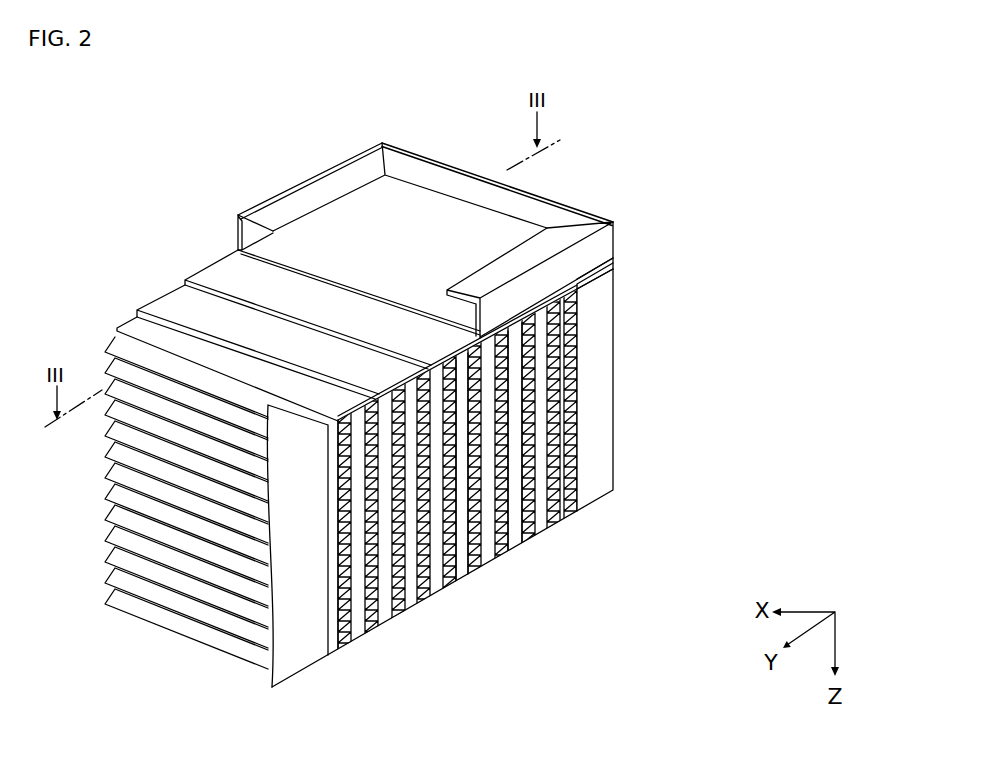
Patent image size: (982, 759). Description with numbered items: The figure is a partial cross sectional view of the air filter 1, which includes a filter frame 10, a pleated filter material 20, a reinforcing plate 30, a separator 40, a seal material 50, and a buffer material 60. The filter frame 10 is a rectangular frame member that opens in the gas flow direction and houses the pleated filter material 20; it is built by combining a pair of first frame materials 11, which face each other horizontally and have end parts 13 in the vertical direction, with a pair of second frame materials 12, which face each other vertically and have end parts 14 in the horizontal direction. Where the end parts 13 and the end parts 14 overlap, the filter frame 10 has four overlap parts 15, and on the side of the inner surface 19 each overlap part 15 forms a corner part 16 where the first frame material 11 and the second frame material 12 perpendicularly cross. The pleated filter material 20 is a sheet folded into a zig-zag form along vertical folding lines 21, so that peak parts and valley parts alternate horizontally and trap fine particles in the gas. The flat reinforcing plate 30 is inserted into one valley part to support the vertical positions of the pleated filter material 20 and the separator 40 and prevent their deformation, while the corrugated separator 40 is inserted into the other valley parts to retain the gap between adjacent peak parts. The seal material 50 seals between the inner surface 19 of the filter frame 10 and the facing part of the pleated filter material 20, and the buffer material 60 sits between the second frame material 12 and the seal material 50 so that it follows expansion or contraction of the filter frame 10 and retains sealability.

The air filter 1 is at (278, 157).
The filter frame 10 is at (620, 214).
The first frame material 11 is at (604, 400).
The second frame material 12 is at (460, 177).
The end part 13 is at (616, 256).
The end part 14 is at (616, 264).
The overlap part 15 is at (604, 285).
The corner part 16 is at (577, 285).
The inner surface 19 is at (279, 268).
The pleated filter material 20 is at (436, 592).
The folding line 21 is at (116, 333).
The reinforcing plate 30 is at (522, 524).
The separator 40 is at (422, 592).
The seal material 50 is at (168, 302).
The buffer material 60 is at (215, 272).